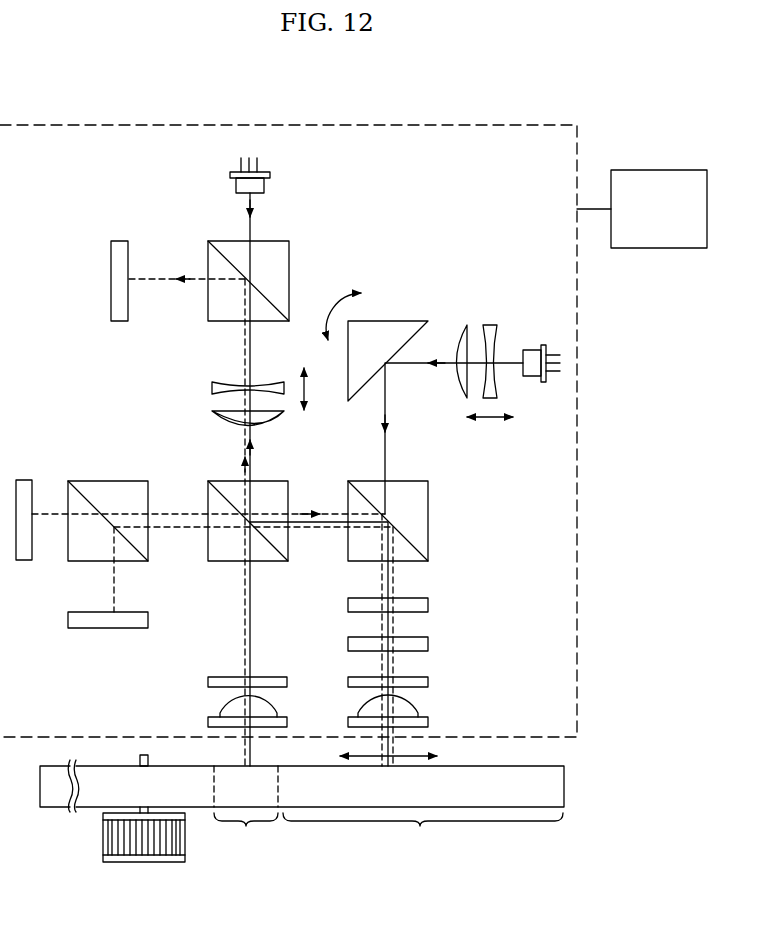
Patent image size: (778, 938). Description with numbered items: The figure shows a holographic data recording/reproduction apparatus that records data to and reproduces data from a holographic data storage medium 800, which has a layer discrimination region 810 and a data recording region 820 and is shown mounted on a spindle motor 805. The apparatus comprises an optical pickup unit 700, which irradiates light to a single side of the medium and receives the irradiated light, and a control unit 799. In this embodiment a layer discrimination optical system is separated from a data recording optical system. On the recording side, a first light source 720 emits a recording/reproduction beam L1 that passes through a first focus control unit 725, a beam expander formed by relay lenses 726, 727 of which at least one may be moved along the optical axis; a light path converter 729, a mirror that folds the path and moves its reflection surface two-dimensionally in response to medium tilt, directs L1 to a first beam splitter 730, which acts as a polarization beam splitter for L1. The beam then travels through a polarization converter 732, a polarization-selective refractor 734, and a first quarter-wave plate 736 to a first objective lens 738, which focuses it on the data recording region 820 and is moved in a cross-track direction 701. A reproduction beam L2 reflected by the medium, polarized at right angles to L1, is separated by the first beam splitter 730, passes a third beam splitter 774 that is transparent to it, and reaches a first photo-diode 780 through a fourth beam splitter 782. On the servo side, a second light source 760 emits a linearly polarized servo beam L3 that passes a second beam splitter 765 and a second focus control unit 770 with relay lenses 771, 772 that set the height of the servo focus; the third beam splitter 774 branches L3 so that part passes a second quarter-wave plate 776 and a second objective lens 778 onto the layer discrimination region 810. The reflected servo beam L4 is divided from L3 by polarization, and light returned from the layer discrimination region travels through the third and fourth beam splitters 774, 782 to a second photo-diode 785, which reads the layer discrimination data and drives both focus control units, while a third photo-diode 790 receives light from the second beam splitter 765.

The optical pickup unit 700 is at (545, 125).
The control unit 799 is at (659, 170).
The second light source 760 is at (265, 186).
The second beam splitter 765 is at (289, 262).
The third photo-diode 790 is at (120, 241).
The light path converter 729 is at (382, 321).
The first focus control unit 725 is at (472, 324).
The relay lens 726 is at (459, 325).
The relay lens 727 is at (490, 325).
The first light source 720 is at (541, 348).
The recording/reproduction beam L1 is at (385, 452).
The reproduction beam L2 is at (182, 512).
The servo beam L3 is at (250, 360).
The reflected servo beam L4 is at (245, 350).
The second focus control unit 770 is at (204, 397).
The relay lens 771 is at (212, 388).
The relay lens 772 is at (212, 414).
The first photo-diode 780 is at (22, 480).
The fourth beam splitter 782 is at (99, 481).
The second photo-diode 785 is at (68, 622).
The third beam splitter 774 is at (236, 562).
The first beam splitter 730 is at (428, 510).
The polarization converter 732 is at (428, 606).
The polarization-selective refractor 734 is at (428, 645).
The first quarter-wave plate 736 is at (428, 683).
The first objective lens 738 is at (428, 721).
The second quarter-wave plate 776 is at (208, 681).
The second objective lens 778 is at (212, 701).
The holographic data storage medium 800 is at (565, 787).
The spindle motor 805 is at (150, 863).
The layer discrimination region 810 is at (246, 810).
The data recording region 820 is at (423, 833).
The cross-track direction 701 is at (408, 756).